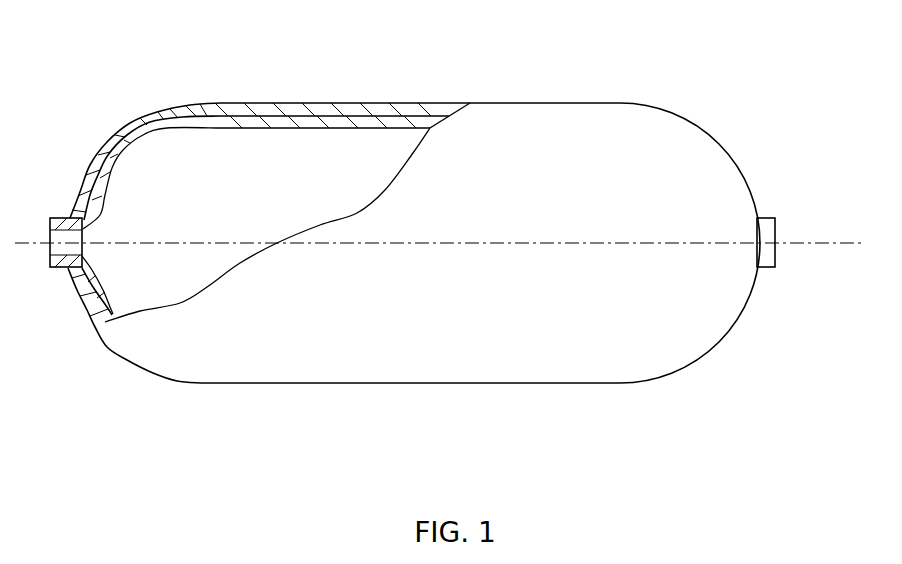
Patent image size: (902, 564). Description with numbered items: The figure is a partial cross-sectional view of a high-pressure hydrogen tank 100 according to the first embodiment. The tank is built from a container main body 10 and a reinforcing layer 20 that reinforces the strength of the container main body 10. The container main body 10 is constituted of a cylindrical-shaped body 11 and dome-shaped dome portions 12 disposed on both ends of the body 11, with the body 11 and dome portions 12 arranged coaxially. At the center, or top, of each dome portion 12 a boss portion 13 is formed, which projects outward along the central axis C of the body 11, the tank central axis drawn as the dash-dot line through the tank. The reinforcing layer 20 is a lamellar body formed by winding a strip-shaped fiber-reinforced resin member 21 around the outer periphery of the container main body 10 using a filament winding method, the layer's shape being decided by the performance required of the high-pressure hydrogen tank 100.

The high-pressure hydrogen tank 100 is at (692, 91).
The container main body 10 is at (422, 121).
The body 11 is at (373, 123).
The dome portion 12 is at (82, 186).
The boss portion 13 is at (55, 268).
The reinforcing layer 20 is at (300, 103).
The fiber-reinforced resin member 21 is at (235, 106).
The central axis C is at (827, 241).